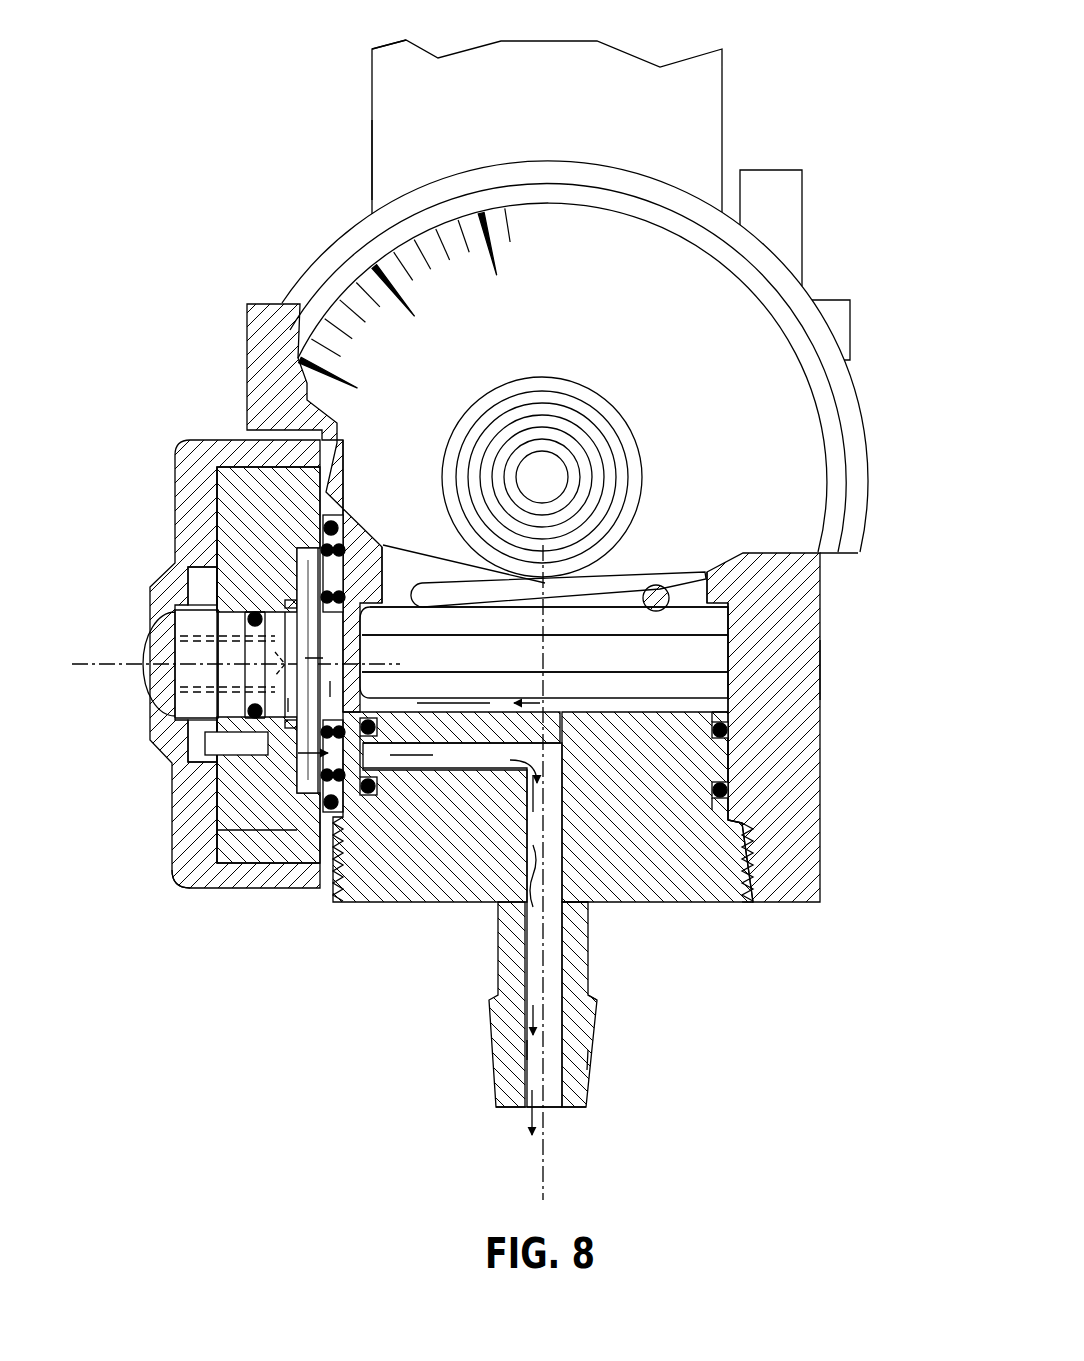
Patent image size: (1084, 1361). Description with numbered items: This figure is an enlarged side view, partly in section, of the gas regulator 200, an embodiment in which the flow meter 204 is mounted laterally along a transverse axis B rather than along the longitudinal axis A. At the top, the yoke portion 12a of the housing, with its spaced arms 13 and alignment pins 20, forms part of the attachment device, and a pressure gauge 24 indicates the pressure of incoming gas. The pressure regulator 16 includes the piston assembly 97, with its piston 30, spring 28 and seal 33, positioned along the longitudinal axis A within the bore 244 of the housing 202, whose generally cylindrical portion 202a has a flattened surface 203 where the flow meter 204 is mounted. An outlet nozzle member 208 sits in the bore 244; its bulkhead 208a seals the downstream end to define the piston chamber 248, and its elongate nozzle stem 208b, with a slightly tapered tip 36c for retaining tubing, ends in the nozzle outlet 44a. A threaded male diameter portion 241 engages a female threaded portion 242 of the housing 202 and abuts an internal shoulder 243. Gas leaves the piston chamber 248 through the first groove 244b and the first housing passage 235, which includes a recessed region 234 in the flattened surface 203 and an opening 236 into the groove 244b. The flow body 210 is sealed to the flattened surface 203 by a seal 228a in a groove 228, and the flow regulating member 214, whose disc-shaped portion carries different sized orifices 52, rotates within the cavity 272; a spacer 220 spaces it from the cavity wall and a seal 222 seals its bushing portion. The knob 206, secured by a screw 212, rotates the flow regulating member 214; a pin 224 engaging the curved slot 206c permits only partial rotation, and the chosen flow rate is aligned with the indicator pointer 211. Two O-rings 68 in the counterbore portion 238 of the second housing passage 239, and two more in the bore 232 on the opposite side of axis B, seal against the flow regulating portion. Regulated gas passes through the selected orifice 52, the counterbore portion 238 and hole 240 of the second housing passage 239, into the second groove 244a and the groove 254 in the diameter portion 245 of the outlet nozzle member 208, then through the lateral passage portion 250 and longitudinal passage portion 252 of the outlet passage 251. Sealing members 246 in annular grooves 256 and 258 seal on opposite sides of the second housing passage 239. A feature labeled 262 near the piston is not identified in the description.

The gas regulator 200 is at (282, 140).
The yoke portion 12a is at (718, 86).
The arms 13 is at (698, 130).
The alignment pins 20 is at (770, 185).
The pressure gauge 24 is at (722, 305).
The piston assembly 97 is at (607, 598).
The spring 28 is at (651, 586).
The indicator pointer 211 is at (298, 358).
The bore 232 is at (347, 574).
The groove 228 is at (340, 521).
The seal 228a is at (345, 547).
The O-rings 68 is at (347, 553).
The knob 206 is at (186, 462).
The cavity 272 is at (296, 540).
The flow body 210 is at (237, 474).
The seal 222 is at (190, 586).
The curved slot 206c is at (190, 745).
The pin 224 is at (236, 752).
The screw 212 is at (162, 661).
The transverse axis B is at (110, 666).
The spacer 220 is at (300, 596).
The flow regulating member 214 is at (300, 562).
The orifices 52 is at (238, 836).
The hole 240 is at (425, 870).
The flattened surface 203 is at (338, 893).
The groove 254 is at (384, 741).
The second housing passage 239 is at (382, 790).
The counterbore portion 238 is at (353, 816).
The lateral passage portion 250 is at (437, 768).
The outlet passage 251 is at (533, 943).
The longitudinal passage portion 252 is at (523, 1048).
The longitudinal axis A is at (541, 1171).
The seal 33 is at (692, 664).
The recessed region 234 is at (362, 625).
The first housing passage 235 is at (360, 640).
The opening 236 is at (365, 690).
The chamber 262 is at (596, 700).
The piston 30 is at (735, 620).
The housing 202 is at (804, 586).
The generally cylindrical portion 202a is at (788, 653).
The pressure regulator 16 is at (768, 631).
The piston chamber 248 is at (731, 685).
The bore 244 is at (731, 806).
The sealing members 246 is at (723, 731).
The first groove 244b is at (733, 705).
The second groove 244a is at (733, 759).
The female threaded portion 242 is at (754, 855).
The internal shoulder 243 is at (745, 820).
The threaded male diameter portion 241 is at (745, 902).
The annular groove 256 is at (715, 730).
The annular groove 258 is at (712, 793).
The diameter portion 245 is at (734, 814).
The outlet nozzle member 208 is at (589, 954).
The bulkhead 208a is at (618, 880).
The tapered tip 36c is at (596, 999).
The elongate nozzle stem 208b is at (588, 1061).
The nozzle outlet 44a is at (553, 1108).
The flow meter 204 is at (167, 937).